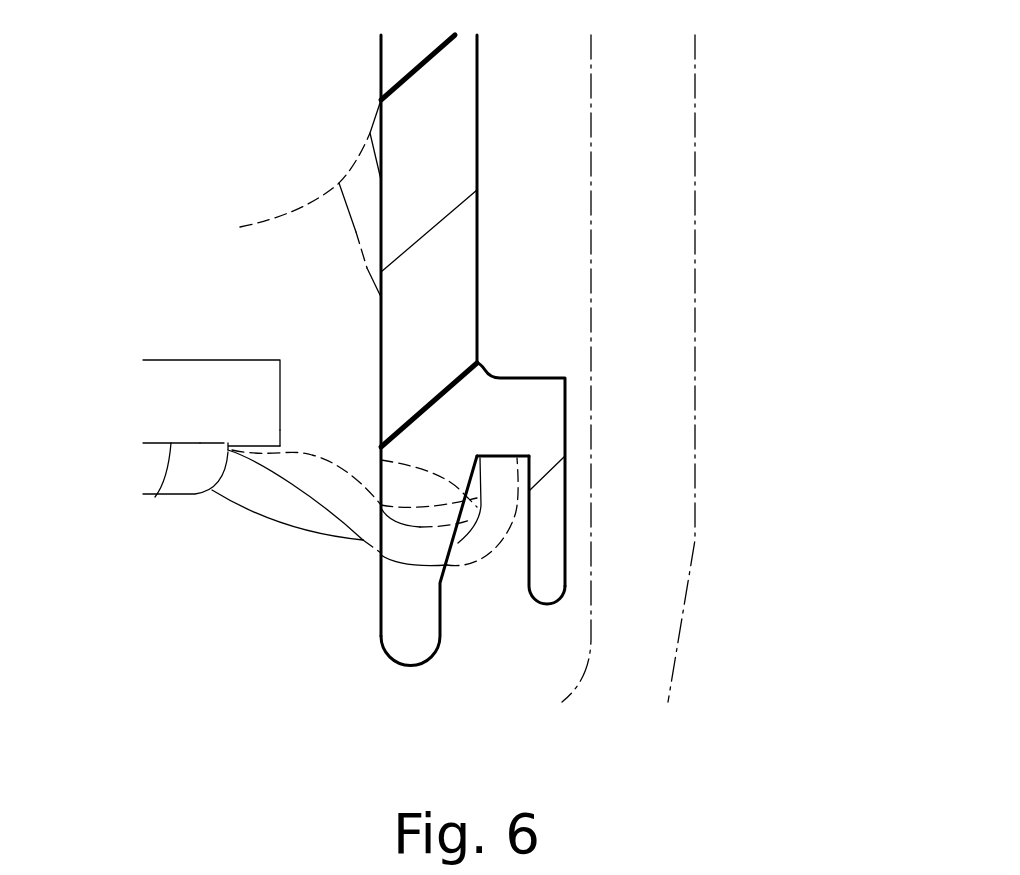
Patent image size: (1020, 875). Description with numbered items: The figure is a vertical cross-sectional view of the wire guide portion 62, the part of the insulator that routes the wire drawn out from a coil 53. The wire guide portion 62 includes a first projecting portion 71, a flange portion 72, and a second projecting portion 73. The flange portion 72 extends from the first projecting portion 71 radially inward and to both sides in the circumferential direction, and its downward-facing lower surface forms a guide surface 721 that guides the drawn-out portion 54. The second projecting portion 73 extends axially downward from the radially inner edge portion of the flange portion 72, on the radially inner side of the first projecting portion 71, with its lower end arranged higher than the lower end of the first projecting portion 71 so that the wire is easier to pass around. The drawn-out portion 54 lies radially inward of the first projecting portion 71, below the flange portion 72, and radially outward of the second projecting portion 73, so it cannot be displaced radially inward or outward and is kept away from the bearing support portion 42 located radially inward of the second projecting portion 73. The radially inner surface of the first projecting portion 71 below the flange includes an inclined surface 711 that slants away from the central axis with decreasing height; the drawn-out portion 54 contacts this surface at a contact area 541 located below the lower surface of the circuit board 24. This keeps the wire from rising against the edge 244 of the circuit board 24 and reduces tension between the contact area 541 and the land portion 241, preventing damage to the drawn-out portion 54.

The circuit board 24 is at (212, 397).
The land portion 241 is at (155, 497).
The edge of the circuit board 244 is at (280, 445).
The bearing support portion 42 is at (648, 247).
The coil 53 is at (280, 192).
The drawn-out portion 54 is at (280, 508).
The area of contact 541 is at (381, 457).
The wire guide portion 62 is at (574, 413).
The flange portion 72 is at (507, 418).
The guide surface 721 is at (497, 456).
The second projecting portion 73 is at (552, 555).
The first projecting portion 71 is at (412, 606).
The inclined surface 711 is at (455, 540).